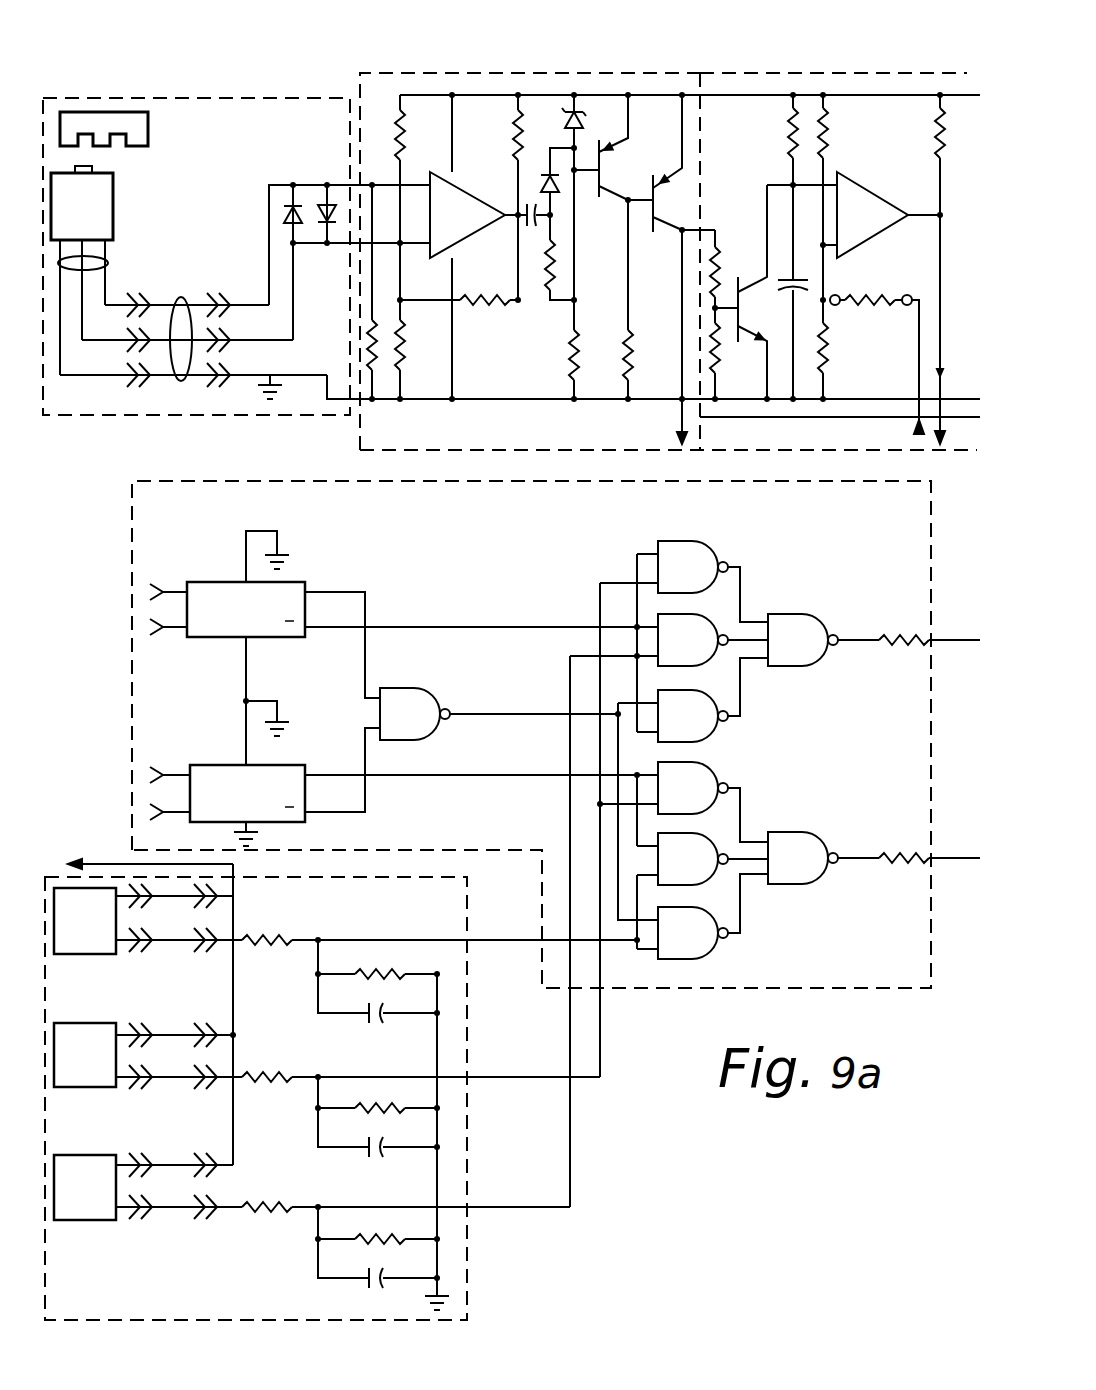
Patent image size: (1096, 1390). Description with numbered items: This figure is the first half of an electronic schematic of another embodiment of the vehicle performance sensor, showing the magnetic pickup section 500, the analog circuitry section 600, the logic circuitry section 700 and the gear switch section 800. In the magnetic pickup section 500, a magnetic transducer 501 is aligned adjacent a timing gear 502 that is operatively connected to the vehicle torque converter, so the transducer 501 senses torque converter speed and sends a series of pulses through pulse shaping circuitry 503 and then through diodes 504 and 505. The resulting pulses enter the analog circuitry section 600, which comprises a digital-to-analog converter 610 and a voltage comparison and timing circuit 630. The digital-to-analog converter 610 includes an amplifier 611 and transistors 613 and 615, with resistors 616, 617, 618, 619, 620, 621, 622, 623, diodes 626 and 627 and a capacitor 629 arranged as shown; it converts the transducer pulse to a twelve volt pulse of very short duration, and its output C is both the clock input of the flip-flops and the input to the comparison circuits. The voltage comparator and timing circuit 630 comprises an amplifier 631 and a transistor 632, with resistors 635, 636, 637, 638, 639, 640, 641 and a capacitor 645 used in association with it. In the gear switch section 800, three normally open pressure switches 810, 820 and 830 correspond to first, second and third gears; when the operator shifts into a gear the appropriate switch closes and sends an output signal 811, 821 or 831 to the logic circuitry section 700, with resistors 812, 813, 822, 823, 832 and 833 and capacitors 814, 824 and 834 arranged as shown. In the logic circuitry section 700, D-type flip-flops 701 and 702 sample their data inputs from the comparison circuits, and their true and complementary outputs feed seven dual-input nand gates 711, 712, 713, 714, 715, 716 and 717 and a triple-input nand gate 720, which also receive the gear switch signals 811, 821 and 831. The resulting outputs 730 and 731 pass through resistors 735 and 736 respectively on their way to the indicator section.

The magnetic pickup section 500 is at (152, 40).
The magnetic transducer 501 is at (123, 192).
The timing gear 502 is at (150, 127).
The pulse shaping circuitry 503 is at (200, 266).
The diode 504 is at (282, 218).
The diode 505 is at (324, 232).
The analog circuitry section 600 is at (699, 62).
The digital-to-analog converter 610 is at (481, 72).
The amplifier 611 is at (466, 226).
The transistor 613 is at (608, 166).
The transistor 615 is at (668, 198).
The resistor 616 is at (402, 132).
The resistor 617 is at (379, 372).
The resistor 618 is at (403, 363).
The resistor 619 is at (508, 306).
The resistor 620 is at (512, 136).
The resistor 621 is at (539, 280).
The resistor 622 is at (571, 356).
The resistor 623 is at (626, 344).
The diode 626 is at (542, 181).
The diode 627 is at (578, 119).
The capacitor 629 is at (526, 226).
The voltage comparison and timing circuit 630 is at (830, 72).
The amplifier 631 is at (873, 226).
The transistor 632 is at (740, 309).
The resistor 635 is at (717, 262).
The resistor 636 is at (723, 359).
The resistor 637 is at (786, 138).
The resistor 638 is at (826, 136).
The resistor 639 is at (837, 360).
The resistor 640 is at (874, 307).
The resistor 641 is at (936, 124).
The capacitor 645 is at (818, 282).
The logic circuitry section 700 is at (131, 600).
The D-type flip-flop 701 is at (262, 617).
The D-type flip-flop 702 is at (262, 802).
The dual-input nand gate 711 is at (419, 725).
The dual-input nand gate 712 is at (698, 579).
The dual-input nand gate 713 is at (698, 652).
The dual-input nand gate 714 is at (698, 728).
The dual-input nand gate 715 is at (698, 800).
The dual-input nand gate 716 is at (698, 871).
The dual-input nand gate 717 is at (698, 945).
The triple-input nand gate 720 is at (808, 652).
The output 730 is at (856, 646).
The output 731 is at (857, 864).
The resistor 735 is at (905, 612).
The resistor 736 is at (900, 830).
The gear switch section 800 is at (468, 1276).
The pressure switch 810 is at (98, 925).
The output signal 811 is at (518, 944).
The resistor 812 is at (381, 973).
The resistor 813 is at (250, 938).
The capacitor 814 is at (368, 1012).
The pressure switch 820 is at (98, 1060).
The output signal 821 is at (518, 1081).
The resistor 822 is at (381, 1107).
The resistor 823 is at (250, 1075).
The capacitor 824 is at (368, 1147).
The pressure switch 830 is at (98, 1192).
The output signal 831 is at (518, 1211).
The resistor 832 is at (381, 1238).
The resistor 833 is at (250, 1205).
The capacitor 834 is at (368, 1278).